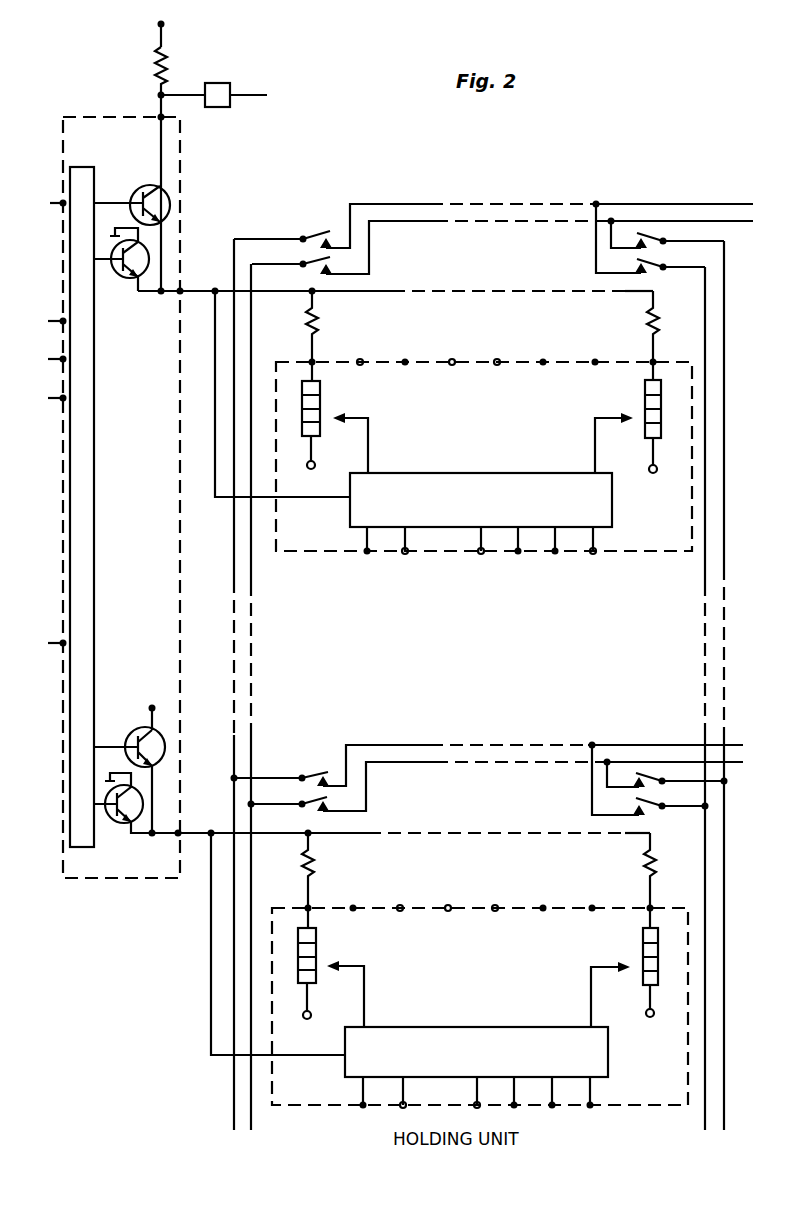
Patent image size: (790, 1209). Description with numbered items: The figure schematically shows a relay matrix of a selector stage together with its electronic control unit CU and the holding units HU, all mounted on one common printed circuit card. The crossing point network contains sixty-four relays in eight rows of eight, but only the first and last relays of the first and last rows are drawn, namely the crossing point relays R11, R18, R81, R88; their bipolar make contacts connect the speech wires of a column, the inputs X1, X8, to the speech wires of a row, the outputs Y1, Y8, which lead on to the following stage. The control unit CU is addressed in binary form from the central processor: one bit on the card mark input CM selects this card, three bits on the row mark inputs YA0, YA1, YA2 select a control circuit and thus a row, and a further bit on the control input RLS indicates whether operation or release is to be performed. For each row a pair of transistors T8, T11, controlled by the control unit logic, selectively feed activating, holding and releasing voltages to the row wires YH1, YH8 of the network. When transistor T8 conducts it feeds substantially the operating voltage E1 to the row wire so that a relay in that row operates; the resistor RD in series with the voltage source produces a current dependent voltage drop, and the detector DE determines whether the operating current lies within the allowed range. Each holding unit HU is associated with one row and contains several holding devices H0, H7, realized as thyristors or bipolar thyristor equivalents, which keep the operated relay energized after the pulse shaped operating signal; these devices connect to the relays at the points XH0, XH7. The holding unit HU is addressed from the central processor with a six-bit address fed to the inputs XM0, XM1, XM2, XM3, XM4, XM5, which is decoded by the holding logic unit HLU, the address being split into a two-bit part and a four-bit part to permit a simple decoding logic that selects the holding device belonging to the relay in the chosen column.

The control unit CU is at (114, 117).
The operating voltage E1 is at (184, 30).
The resistor RD is at (176, 82).
The detector DE is at (216, 84).
The transistor T8 is at (147, 188).
The transistor T11 is at (124, 270).
The card mark input CM is at (43, 204).
The row mark input YA0 is at (38, 322).
The row mark input YA1 is at (38, 360).
The row mark input YA2 is at (38, 399).
The control input RLS is at (37, 644).
The row wire YH1 is at (185, 289).
The row wire YH8 is at (188, 831).
The column speech wires X1 is at (241, 699).
The column speech wires X8 is at (715, 702).
The row speech wires Y1 is at (605, 209).
The row speech wires Y8 is at (600, 751).
The crossing point relay R11 is at (317, 325).
The crossing point relay R18 is at (657, 327).
The crossing point relay R81 is at (312, 869).
The crossing point relay R88 is at (652, 869).
The holding unit HU is at (457, 457).
The holding circuit connection XH0 is at (315, 362).
The holding circuit connection XH7 is at (655, 362).
The holding device H0 is at (321, 383).
The holding device H7 is at (668, 417).
The holding logic unit HLU is at (612, 508).
The holding unit address input XM0 is at (481, 554).
The holding unit address input XM1 is at (518, 554).
The holding unit address input XM2 is at (555, 554).
The holding unit address input XM3 is at (594, 554).
The holding unit address input XM4 is at (367, 553).
The holding unit address input XM5 is at (405, 554).